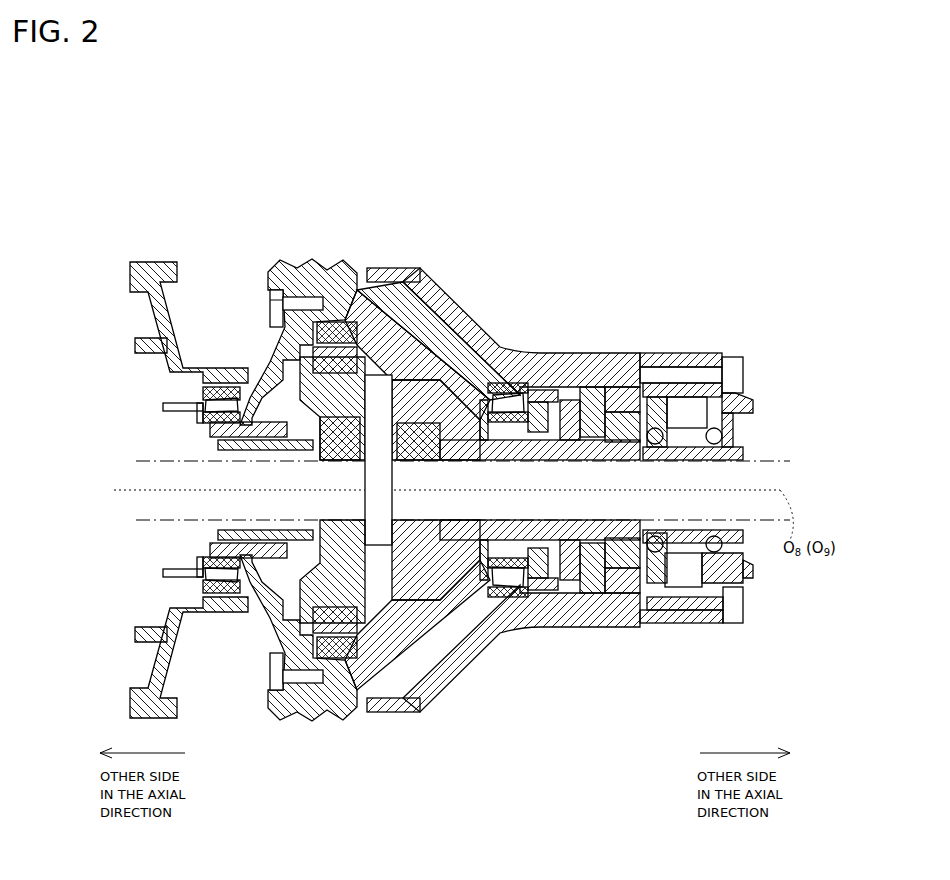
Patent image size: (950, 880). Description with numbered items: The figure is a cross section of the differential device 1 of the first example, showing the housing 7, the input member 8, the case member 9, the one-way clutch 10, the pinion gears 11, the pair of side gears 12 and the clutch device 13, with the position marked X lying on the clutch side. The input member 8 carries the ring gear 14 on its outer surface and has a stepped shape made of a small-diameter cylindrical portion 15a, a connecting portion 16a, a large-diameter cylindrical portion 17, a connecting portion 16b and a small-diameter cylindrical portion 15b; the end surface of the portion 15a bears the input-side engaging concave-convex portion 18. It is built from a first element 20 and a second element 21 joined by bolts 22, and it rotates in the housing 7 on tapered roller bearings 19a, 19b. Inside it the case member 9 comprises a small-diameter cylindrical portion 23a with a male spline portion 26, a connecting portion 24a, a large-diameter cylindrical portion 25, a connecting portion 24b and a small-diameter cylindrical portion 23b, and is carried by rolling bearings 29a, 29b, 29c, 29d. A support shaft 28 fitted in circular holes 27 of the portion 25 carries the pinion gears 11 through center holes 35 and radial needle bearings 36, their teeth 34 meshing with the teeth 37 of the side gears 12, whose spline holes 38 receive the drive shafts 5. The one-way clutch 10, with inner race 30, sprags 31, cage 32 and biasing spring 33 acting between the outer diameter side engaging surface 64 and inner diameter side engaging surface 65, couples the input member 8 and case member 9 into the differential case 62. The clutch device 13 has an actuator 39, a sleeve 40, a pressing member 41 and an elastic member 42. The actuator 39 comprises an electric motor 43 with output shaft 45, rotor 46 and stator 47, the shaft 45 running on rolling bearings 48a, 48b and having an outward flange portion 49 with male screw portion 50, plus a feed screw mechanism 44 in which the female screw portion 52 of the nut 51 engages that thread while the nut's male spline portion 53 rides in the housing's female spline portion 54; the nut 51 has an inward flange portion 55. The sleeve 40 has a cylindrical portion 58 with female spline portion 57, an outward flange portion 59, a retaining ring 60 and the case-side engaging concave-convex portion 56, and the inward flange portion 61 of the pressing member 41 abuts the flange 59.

The differential device 1 is at (724, 316).
The drive shaft 5 is at (762, 456).
The housing 7 is at (490, 640).
The input member 8 is at (340, 262).
The case member 9 is at (266, 618).
The one-way clutch 10 is at (340, 722).
The pinion gear 11 is at (455, 322).
The side gear 12 is at (260, 398).
The clutch device 13 is at (646, 380).
The ring gear 14 is at (294, 260).
The small-diameter cylindrical portion 15a is at (522, 640).
The small-diameter cylindrical portion 15b is at (222, 436).
The connecting portion 16a is at (452, 660).
The connecting portion 16b is at (250, 605).
The large-diameter cylindrical portion 17 is at (298, 722).
The input-side engaging concave-convex portion 18 is at (533, 608).
The tapered roller bearing 19a is at (505, 605).
The tapered roller bearing 19b is at (192, 577).
The first element 20 is at (400, 712).
The second element 21 is at (266, 664).
The bolt 22 is at (270, 300).
The small-diameter cylindrical portion 23a is at (509, 481).
The small-diameter cylindrical portion 23b is at (250, 452).
The connecting portion 24a is at (505, 350).
The connecting portion 24b is at (192, 407).
The large-diameter cylindrical portion 25 is at (268, 318).
The male spline portion 26 is at (540, 465).
The circular hole 27 is at (432, 290).
The support shaft 28 is at (386, 342).
The rolling bearing 29a is at (412, 566).
The rolling bearing 29b is at (240, 530).
The rolling bearing 29c is at (468, 480).
The rolling bearing 29d is at (282, 530).
The inner race 30 is at (393, 268).
The sprag 31 is at (320, 258).
The cage 32 is at (372, 268).
The biasing spring 33 is at (328, 268).
The teeth 34 is at (377, 465).
The center hole 35 is at (378, 460).
The radial needle bearing 36 is at (387, 467).
The teeth 37 is at (474, 342).
The spline hole 38 is at (318, 468).
The actuator 39 is at (736, 380).
The sleeve 40 is at (577, 505).
The pressing member 41 is at (586, 615).
The elastic member 42 is at (600, 390).
The electric motor 43 is at (745, 400).
The feed screw mechanism 44 is at (616, 627).
The output shaft 45 is at (695, 452).
The rotor 46 is at (684, 553).
The stator 47 is at (703, 625).
The rolling bearing 48a is at (693, 524).
The rolling bearing 48b is at (682, 435).
The outward flange portion 49 is at (655, 623).
The male screw portion 50 is at (636, 627).
The nut 51 is at (618, 390).
The female screw portion 52 is at (680, 360).
The male spline portion 53 is at (602, 627).
The female spline portion 54 is at (660, 385).
The inward flange portion 55 is at (584, 445).
The case-side engaging concave-convex portion 56 is at (545, 509).
The female spline portion 57 is at (612, 503).
The cylindrical portion 58 is at (556, 446).
The outward flange portion 59 is at (566, 612).
The retaining ring 60 is at (623, 450).
The inward flange portion 61 is at (580, 383).
The differential case 62 is at (222, 318).
The outer diameter side engaging surface 64 is at (330, 722).
The inner diameter side engaging surface 65 is at (300, 330).
The axial position X is at (640, 370).